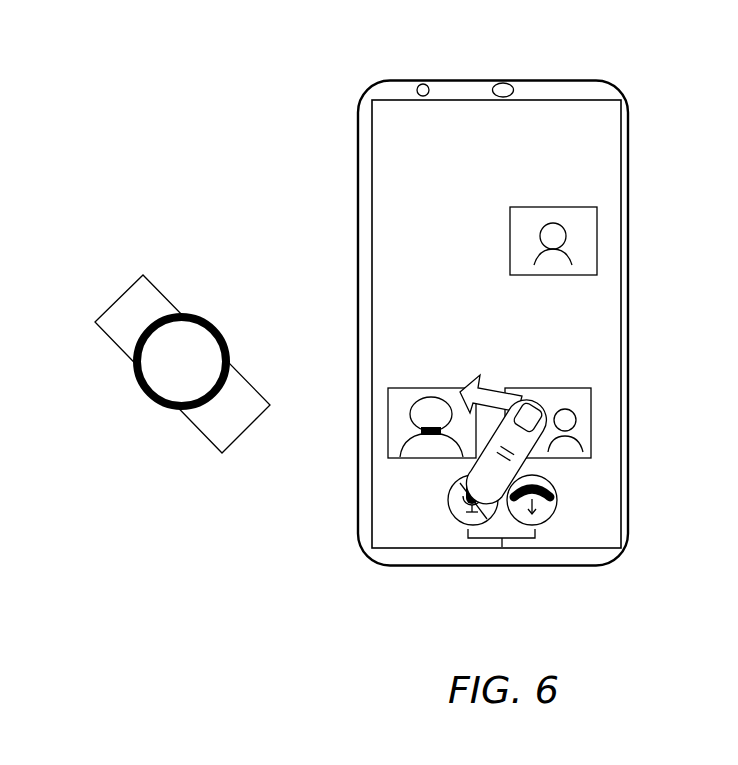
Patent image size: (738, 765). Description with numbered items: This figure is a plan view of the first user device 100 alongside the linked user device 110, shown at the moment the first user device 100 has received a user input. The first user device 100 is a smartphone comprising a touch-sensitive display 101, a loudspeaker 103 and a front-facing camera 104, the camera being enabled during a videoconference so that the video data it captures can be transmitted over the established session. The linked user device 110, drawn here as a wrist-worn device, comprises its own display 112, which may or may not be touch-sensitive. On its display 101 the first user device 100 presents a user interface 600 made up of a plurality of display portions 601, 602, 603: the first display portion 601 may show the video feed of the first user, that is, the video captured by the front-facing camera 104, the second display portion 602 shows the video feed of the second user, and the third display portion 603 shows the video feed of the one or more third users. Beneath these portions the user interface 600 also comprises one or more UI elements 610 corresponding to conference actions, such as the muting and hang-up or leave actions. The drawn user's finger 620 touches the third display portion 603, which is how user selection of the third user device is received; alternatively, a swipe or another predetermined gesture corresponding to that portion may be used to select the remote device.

The first user device 100 is at (352, 155).
The touch-sensitive display 101 is at (365, 522).
The loudspeaker 103 is at (494, 86).
The front-facing camera 104 is at (417, 90).
The linked user device 110 is at (205, 364).
The display 112 is at (168, 340).
The user interface 600 is at (418, 537).
The first display portion 601 is at (597, 238).
The second display portion 602 is at (388, 418).
The third display portion 603 is at (591, 428).
The UI elements 610 is at (502, 552).
The user's finger 620 is at (522, 464).